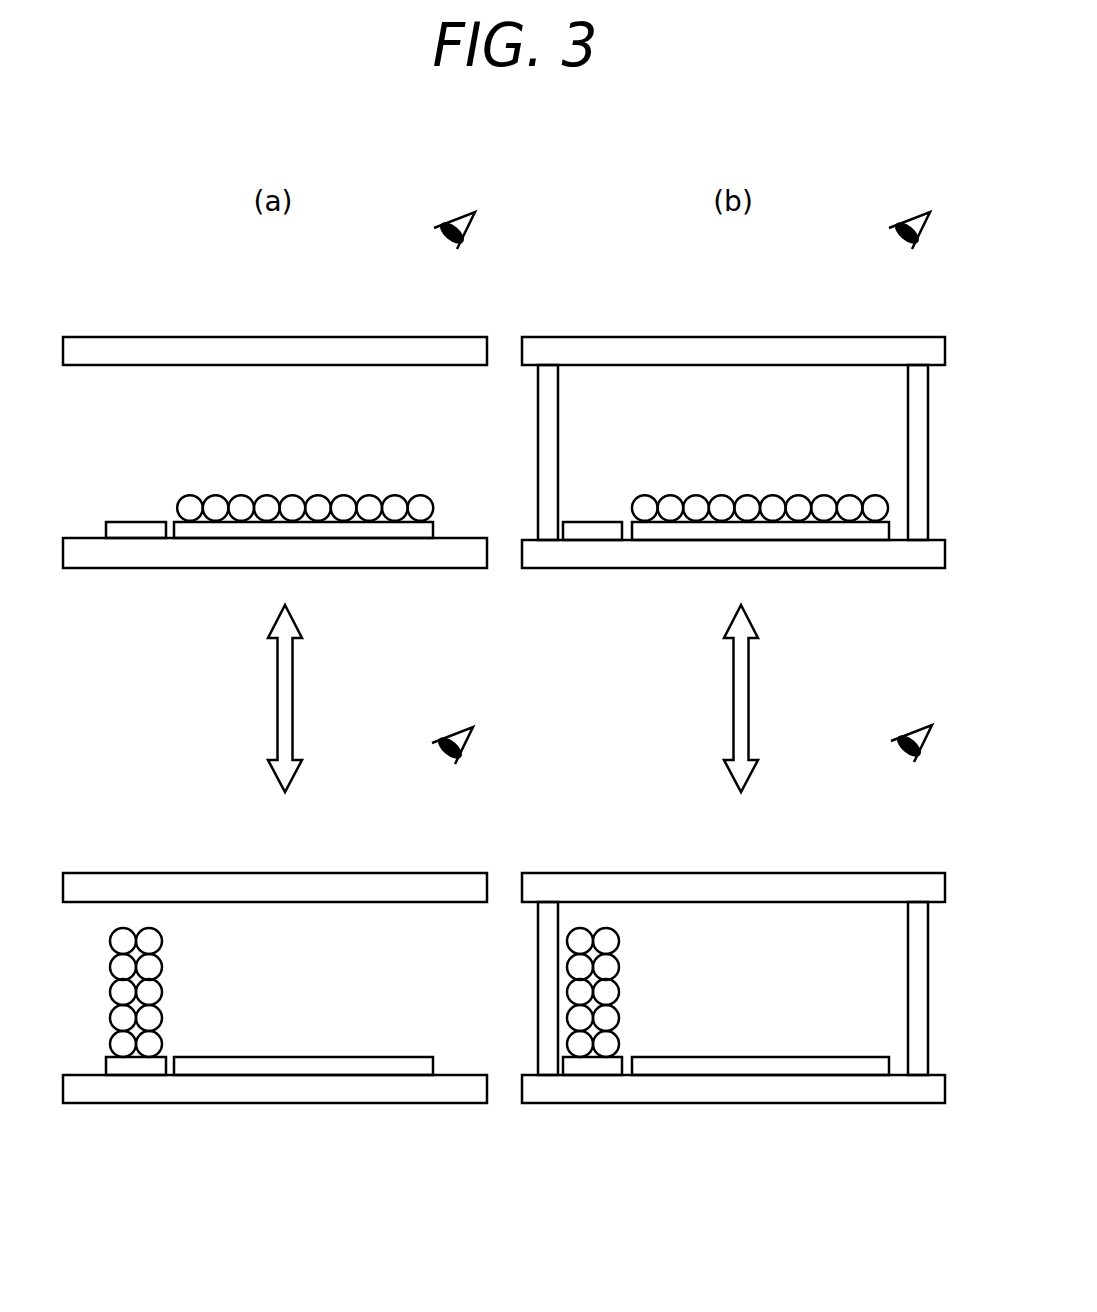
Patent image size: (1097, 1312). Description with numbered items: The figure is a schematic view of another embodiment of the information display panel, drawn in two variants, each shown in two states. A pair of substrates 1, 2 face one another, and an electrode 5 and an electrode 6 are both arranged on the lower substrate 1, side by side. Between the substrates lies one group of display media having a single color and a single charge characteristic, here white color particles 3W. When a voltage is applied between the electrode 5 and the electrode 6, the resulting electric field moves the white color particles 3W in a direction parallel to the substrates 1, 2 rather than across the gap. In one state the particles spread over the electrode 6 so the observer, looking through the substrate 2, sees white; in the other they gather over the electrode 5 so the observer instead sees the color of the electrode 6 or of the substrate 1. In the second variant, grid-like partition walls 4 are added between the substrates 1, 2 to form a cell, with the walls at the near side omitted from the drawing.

The substrate 1 is at (227, 557).
The substrate 2 is at (305, 352).
The white color particles 3W is at (175, 480).
The partition walls 4 is at (550, 447).
The electrode 5 is at (132, 535).
The electrode 6 is at (393, 535).